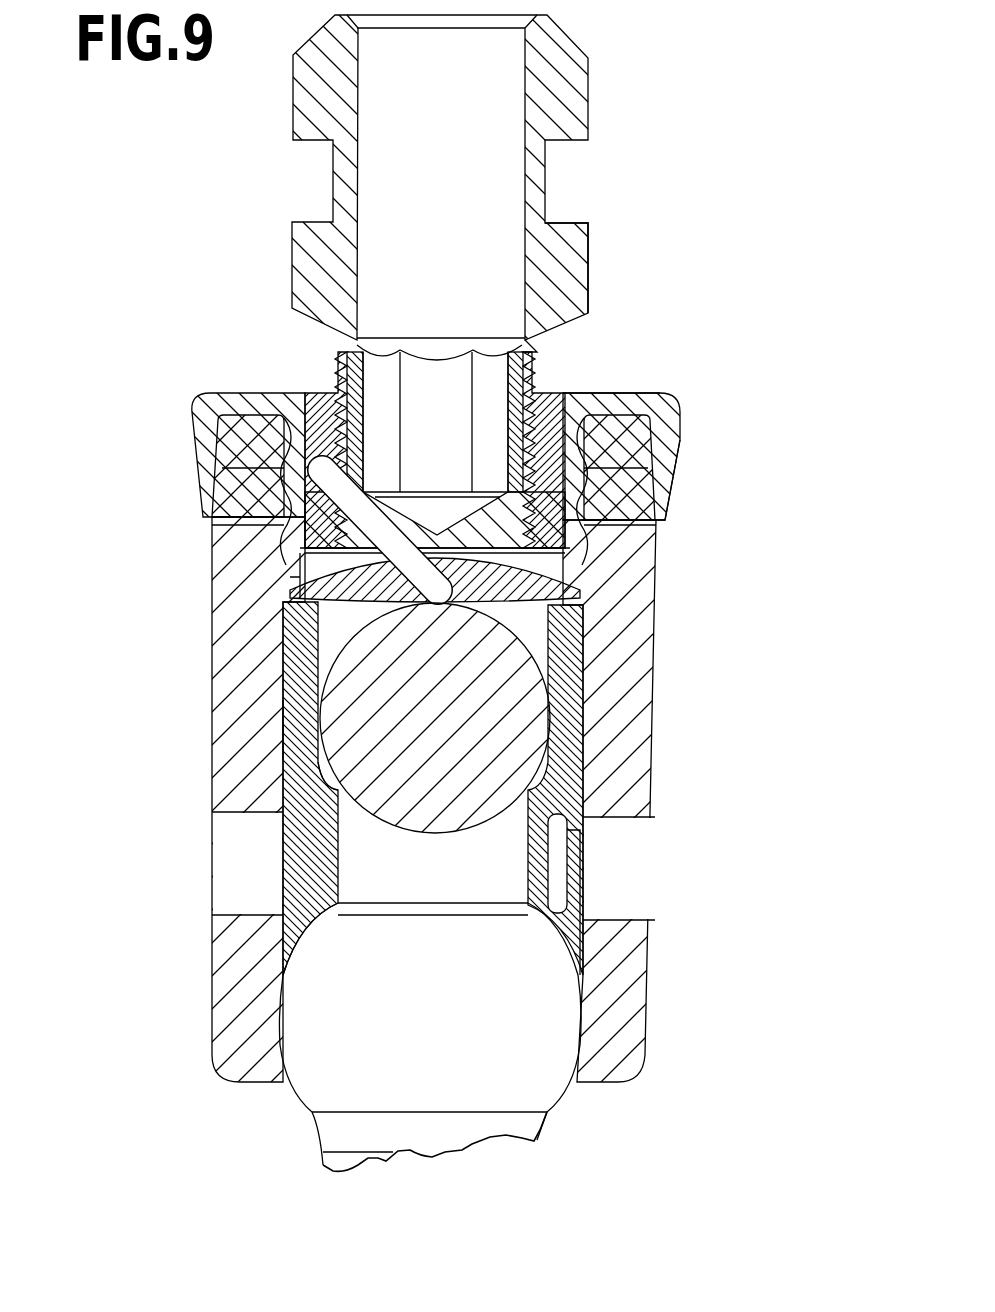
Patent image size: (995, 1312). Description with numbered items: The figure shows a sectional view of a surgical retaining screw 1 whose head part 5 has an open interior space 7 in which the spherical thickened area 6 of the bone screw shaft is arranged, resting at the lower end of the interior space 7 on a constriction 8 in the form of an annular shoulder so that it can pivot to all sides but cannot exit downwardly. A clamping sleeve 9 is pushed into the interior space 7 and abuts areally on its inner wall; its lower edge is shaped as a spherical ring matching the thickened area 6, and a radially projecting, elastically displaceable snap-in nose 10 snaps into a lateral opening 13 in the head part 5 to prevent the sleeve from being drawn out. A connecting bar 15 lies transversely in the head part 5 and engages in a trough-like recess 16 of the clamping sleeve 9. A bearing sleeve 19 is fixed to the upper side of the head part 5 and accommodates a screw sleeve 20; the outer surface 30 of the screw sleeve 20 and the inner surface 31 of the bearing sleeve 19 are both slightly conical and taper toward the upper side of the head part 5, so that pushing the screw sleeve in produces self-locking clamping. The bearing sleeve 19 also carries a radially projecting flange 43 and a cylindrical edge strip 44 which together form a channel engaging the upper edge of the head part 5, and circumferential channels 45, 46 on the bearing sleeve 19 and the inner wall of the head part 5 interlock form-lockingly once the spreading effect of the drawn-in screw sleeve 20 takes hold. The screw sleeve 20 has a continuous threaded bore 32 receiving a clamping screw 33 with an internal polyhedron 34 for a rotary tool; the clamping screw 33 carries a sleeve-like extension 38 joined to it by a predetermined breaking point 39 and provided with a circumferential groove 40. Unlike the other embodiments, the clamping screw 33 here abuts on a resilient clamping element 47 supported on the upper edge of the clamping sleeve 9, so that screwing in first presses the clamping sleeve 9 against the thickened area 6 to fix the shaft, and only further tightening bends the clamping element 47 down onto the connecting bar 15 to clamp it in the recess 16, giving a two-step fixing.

The surgical retaining screw 1 is at (202, 342).
The head part 5 is at (656, 661).
The spherical thickened area 6 is at (533, 1020).
The interior space 7 is at (283, 736).
The constriction 8 is at (285, 1055).
The clamping sleeve 9 is at (584, 720).
The snap-in nose 10 is at (592, 856).
The lateral opening 13 is at (613, 818).
The connecting bar 15 is at (455, 736).
The trough-like recess 16 is at (330, 762).
The bearing sleeve 19 is at (679, 408).
The screw sleeve 20 is at (323, 397).
The outer surface 30 is at (290, 445).
The inner surface 31 is at (285, 484).
The continuous bore 32 is at (536, 462).
The clamping screw 33 is at (546, 363).
The internal polyhedron 34 is at (440, 441).
The sleeve-like extension 38 is at (578, 40).
The predetermined breaking point 39 is at (516, 345).
The circumferential groove 40 is at (568, 219).
The flange 43 is at (608, 393).
The cylindrical edge strip 44 is at (683, 440).
The circumferential channel 45 is at (287, 523).
The circumferential channel 46 is at (287, 550).
The resilient clamping element 47 is at (545, 577).